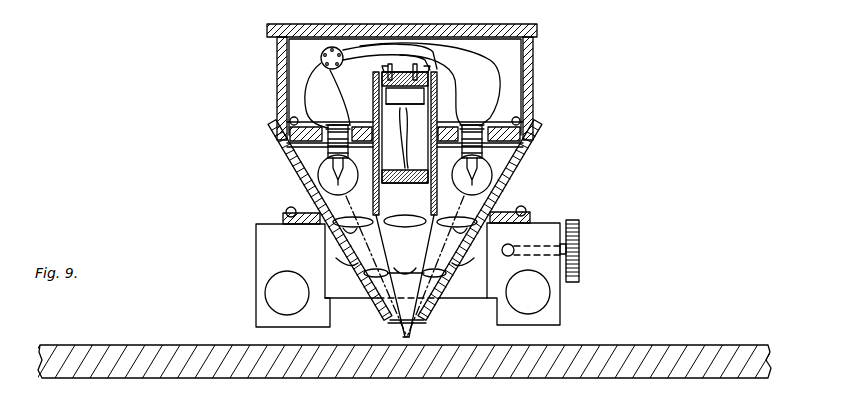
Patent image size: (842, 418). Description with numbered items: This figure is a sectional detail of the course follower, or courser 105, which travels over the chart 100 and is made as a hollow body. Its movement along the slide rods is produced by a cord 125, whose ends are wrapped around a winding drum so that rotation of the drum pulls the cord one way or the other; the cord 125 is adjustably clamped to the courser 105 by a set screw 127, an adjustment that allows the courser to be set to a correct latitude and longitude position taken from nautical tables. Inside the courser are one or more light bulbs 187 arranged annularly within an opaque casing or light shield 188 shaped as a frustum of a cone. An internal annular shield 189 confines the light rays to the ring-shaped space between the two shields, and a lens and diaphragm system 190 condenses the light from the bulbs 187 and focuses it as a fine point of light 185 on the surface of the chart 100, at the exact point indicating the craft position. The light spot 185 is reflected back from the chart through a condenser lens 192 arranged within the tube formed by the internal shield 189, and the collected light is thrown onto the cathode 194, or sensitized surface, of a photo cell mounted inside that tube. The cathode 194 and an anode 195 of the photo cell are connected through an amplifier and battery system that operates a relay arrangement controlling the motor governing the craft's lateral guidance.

The chart 100 is at (627, 345).
The courser 105 is at (519, 25).
The cord 125 is at (514, 246).
The set screw 127 is at (580, 242).
The point of light 185 is at (418, 338).
The light bulbs 187 is at (290, 158).
The light shield 188 is at (296, 178).
The internal annular shield 189 is at (342, 219).
The lens and diaphragm system 190 is at (405, 256).
The condenser lens 192 is at (409, 230).
The cathode 194 is at (406, 178).
The anode 195 is at (405, 200).